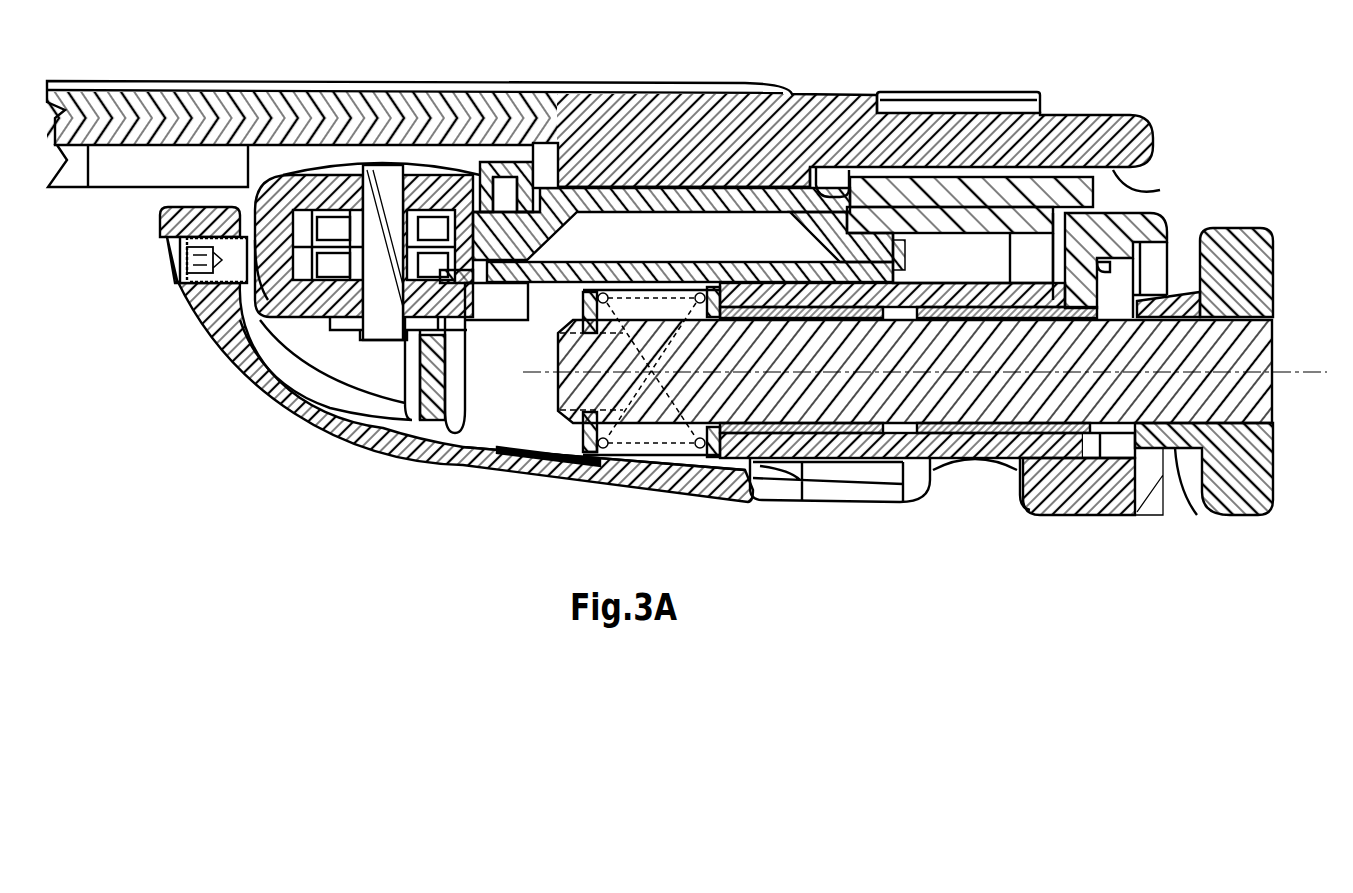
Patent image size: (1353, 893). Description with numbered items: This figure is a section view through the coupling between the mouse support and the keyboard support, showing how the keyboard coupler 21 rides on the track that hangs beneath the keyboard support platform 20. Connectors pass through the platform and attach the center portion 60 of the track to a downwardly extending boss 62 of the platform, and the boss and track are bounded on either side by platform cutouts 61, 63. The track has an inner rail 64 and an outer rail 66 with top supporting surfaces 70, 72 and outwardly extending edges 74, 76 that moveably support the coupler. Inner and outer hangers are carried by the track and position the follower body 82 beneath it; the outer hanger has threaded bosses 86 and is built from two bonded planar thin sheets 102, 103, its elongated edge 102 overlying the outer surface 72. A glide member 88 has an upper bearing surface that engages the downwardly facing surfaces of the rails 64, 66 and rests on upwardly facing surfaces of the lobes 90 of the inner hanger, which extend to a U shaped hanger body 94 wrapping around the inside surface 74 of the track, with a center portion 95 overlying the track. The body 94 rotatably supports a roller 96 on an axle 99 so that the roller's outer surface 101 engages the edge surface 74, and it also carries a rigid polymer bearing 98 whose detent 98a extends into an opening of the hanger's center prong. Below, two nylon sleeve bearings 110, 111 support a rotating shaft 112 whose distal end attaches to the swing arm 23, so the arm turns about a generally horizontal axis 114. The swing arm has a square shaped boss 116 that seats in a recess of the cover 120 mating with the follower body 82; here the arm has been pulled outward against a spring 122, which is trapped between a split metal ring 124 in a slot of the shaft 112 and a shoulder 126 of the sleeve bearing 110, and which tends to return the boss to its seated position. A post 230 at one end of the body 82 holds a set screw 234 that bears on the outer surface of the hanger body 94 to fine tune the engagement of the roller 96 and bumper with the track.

The keyboard support platform 20 is at (1152, 143).
The keyboard coupler 21 is at (380, 472).
The swing arm 23 is at (1247, 502).
The center portion of the track 60 is at (673, 207).
The platform cutout 61 is at (257, 167).
The boss 62 is at (817, 150).
The platform cutout 63 is at (1160, 190).
The inner rail 64 is at (550, 237).
The outer rail 66 is at (827, 242).
The top supporting surface 70 is at (497, 200).
The top supporting surface 72 is at (917, 218).
The outwardly extending edge 74 is at (463, 307).
The outwardly extending edge 76 is at (907, 253).
The follower body 82 is at (610, 477).
The threaded boss 86 is at (1003, 268).
The glide member 88 is at (563, 282).
The lobe 90 is at (502, 322).
The U shaped hanger body 94 is at (283, 197).
The center portion of the body 95 is at (443, 173).
The roller 96 is at (290, 280).
The bearing 98 is at (498, 177).
The detent 98a is at (550, 163).
The axle 99 is at (387, 310).
The outer surface of the roller 101 is at (287, 252).
The elongated edge 102 is at (873, 230).
The planar thin sheet 103 is at (963, 220).
The sleeve bearing 110 is at (850, 437).
The sleeve bearing 111 is at (967, 432).
The rotating shaft 112 is at (1213, 343).
The horizontal axis 114 is at (1303, 375).
The square shaped boss 116 is at (1177, 450).
The cover 120 is at (1153, 509).
The spring 122 is at (693, 452).
The split metal ring 124 is at (593, 297).
The shoulder of the sleeve bearing 126 is at (715, 462).
The post 230 is at (185, 217).
The set screw 234 is at (197, 260).